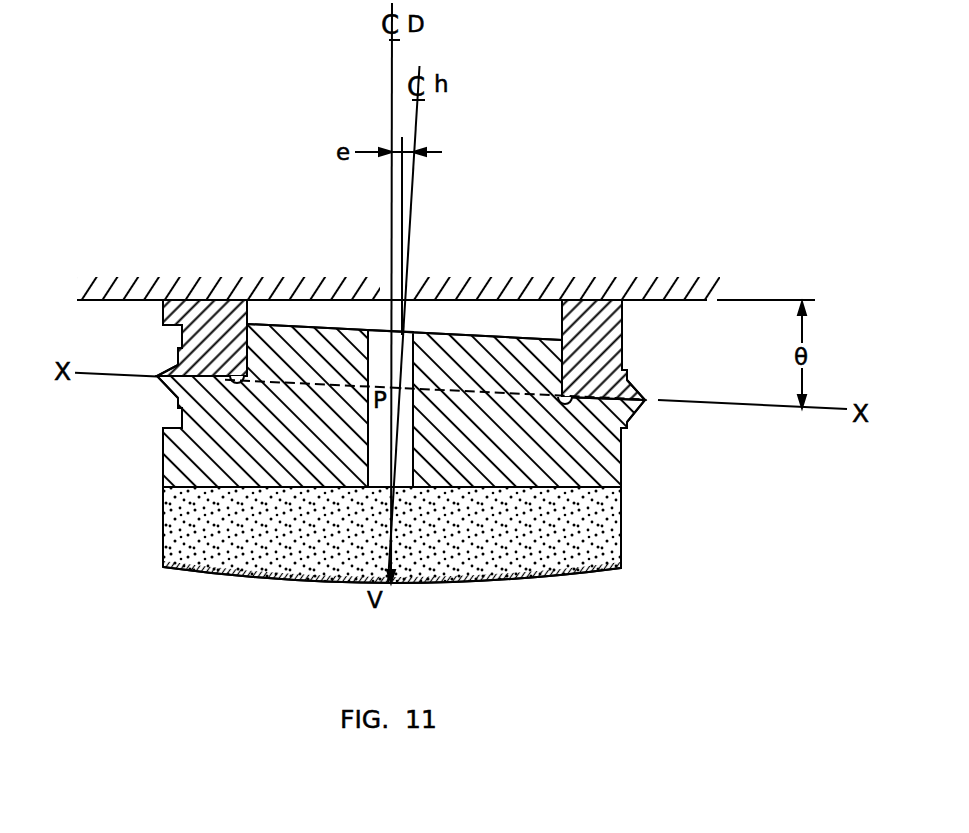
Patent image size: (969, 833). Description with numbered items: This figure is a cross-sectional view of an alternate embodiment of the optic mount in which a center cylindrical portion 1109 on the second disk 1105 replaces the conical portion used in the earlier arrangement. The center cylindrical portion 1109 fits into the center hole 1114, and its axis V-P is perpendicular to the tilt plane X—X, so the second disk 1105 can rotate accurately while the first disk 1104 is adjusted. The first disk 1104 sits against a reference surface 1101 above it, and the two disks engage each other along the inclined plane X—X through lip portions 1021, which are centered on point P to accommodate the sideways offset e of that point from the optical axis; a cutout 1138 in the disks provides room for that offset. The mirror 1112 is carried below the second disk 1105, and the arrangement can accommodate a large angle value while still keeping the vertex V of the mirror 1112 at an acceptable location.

The mounting reference surface 1101 is at (660, 302).
The first disk 1104 is at (623, 350).
The second disk 1105 is at (162, 458).
The center cylindrical portion 1109 is at (404, 286).
The center hole 1114 is at (561, 286).
The lip portions 1021 is at (698, 427).
The groove step 1138 is at (176, 414).
The mirror 1112 is at (392, 602).